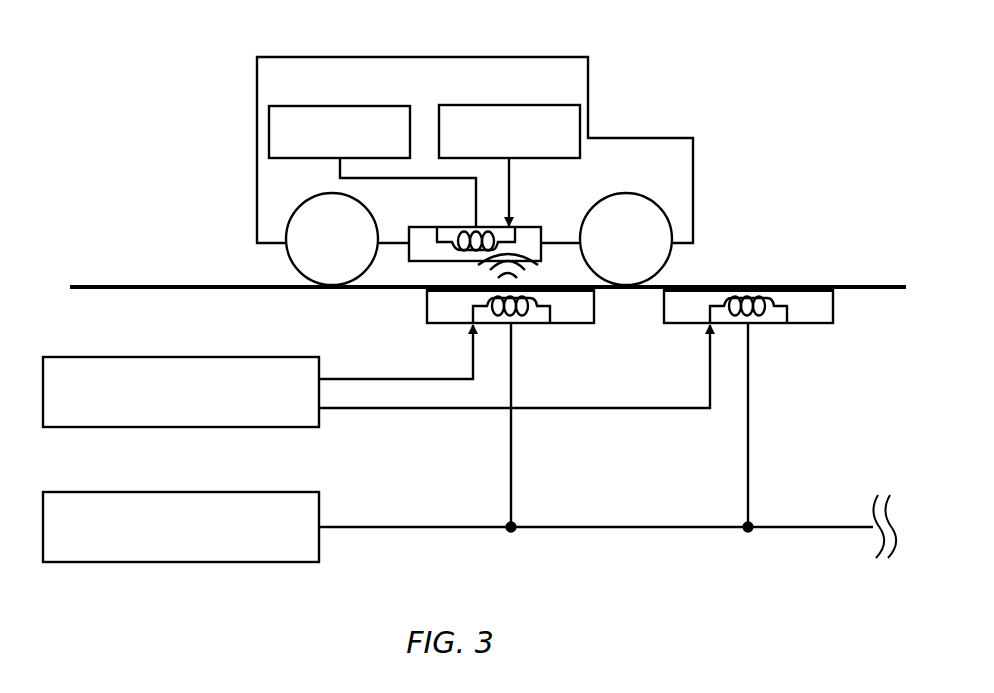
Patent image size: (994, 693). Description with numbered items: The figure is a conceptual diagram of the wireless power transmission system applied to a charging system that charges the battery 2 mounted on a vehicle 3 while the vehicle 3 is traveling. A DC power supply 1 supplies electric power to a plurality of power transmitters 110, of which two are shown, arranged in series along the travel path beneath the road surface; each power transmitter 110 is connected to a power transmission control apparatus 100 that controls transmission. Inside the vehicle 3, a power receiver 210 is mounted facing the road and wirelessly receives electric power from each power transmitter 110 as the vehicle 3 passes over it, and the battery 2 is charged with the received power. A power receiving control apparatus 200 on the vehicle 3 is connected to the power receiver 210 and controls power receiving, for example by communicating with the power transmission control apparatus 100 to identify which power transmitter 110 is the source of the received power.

The DC power supply 1 is at (85, 492).
The battery 2 is at (372, 166).
The vehicle 3 is at (280, 57).
The power transmission control apparatus 100 is at (83, 357).
The power transmitter 110 is at (444, 323).
The power receiving control apparatus 200 is at (509, 165).
The power receiver 210 is at (433, 226).